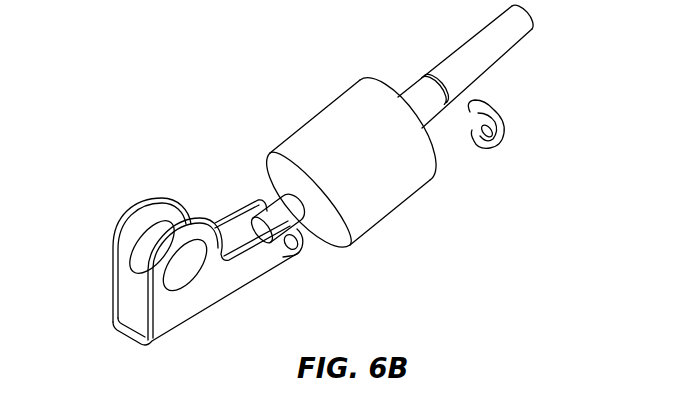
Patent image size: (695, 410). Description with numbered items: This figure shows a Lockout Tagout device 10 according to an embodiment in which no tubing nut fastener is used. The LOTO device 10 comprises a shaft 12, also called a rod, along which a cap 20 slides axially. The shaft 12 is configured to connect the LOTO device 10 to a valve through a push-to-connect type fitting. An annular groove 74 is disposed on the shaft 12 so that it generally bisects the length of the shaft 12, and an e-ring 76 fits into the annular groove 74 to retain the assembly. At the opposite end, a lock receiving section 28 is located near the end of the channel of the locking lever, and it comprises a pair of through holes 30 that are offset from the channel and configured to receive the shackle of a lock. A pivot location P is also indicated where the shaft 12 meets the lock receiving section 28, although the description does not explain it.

The LOTO device 10 is at (200, 92).
The shaft 12 is at (488, 32).
The cap 20 is at (325, 128).
The lock receiving section 28 is at (92, 199).
The through holes 30 is at (180, 272).
The annular groove 74 is at (423, 80).
The e-ring 76 is at (505, 138).
The pin hole P is at (300, 252).